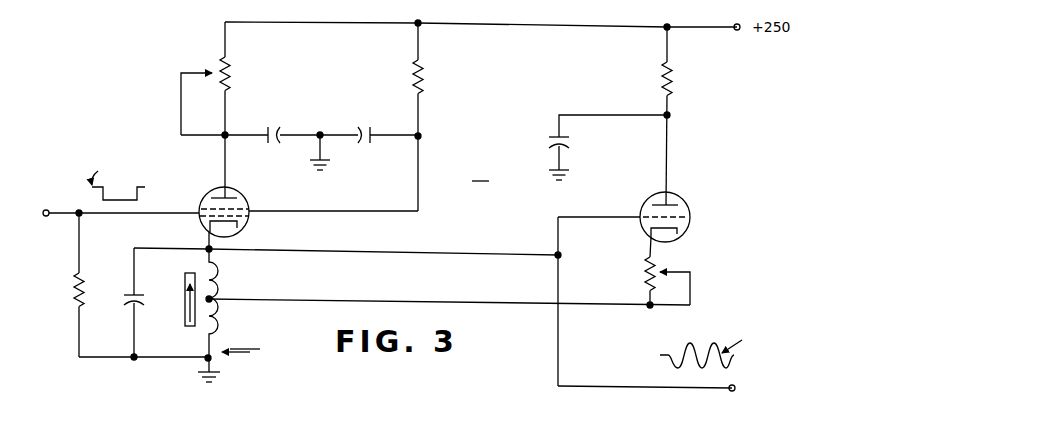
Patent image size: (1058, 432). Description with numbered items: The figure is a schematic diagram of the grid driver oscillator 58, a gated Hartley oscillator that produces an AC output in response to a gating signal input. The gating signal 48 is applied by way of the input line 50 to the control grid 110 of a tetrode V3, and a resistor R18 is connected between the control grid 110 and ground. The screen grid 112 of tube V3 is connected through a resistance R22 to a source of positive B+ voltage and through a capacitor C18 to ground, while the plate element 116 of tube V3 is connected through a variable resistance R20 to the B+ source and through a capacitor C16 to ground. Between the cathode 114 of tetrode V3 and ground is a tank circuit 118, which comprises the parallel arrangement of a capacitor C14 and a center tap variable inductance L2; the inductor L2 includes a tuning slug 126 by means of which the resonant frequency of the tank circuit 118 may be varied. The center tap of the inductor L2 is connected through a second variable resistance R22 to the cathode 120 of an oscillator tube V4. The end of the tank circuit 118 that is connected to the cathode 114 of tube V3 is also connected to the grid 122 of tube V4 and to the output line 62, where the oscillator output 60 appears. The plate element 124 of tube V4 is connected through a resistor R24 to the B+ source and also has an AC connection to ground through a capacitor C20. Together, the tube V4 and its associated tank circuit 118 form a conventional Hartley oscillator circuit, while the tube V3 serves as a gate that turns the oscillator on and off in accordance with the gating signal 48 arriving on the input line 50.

The variable resistance R20 is at (230, 64).
The resistance R22 is at (421, 80).
The resistor R24 is at (670, 67).
The resistor R18 is at (74, 291).
The capacitor C14 is at (130, 294).
The capacitor C16 is at (272, 129).
The capacitor C18 is at (362, 129).
The capacitor C20 is at (555, 134).
The center tap variable inductance L2 is at (216, 290).
The tetrode V3 is at (250, 216).
The oscillator tube V4 is at (690, 217).
The gating signal waveform 48 is at (146, 188).
The input line 50 is at (77, 220).
The grid driver oscillator 58 is at (480, 173).
The oscillator output waveform 60 is at (681, 347).
The output line 62 is at (704, 390).
The control grid 110 is at (203, 222).
The screen grid 112 is at (238, 211).
The cathode 114 is at (236, 229).
The plate element 116 is at (230, 197).
The tank circuit 118 is at (179, 347).
The cathode 120 is at (675, 232).
The grid 122 is at (650, 215).
The plate element 124 is at (671, 200).
The tuning slug 126 is at (185, 282).